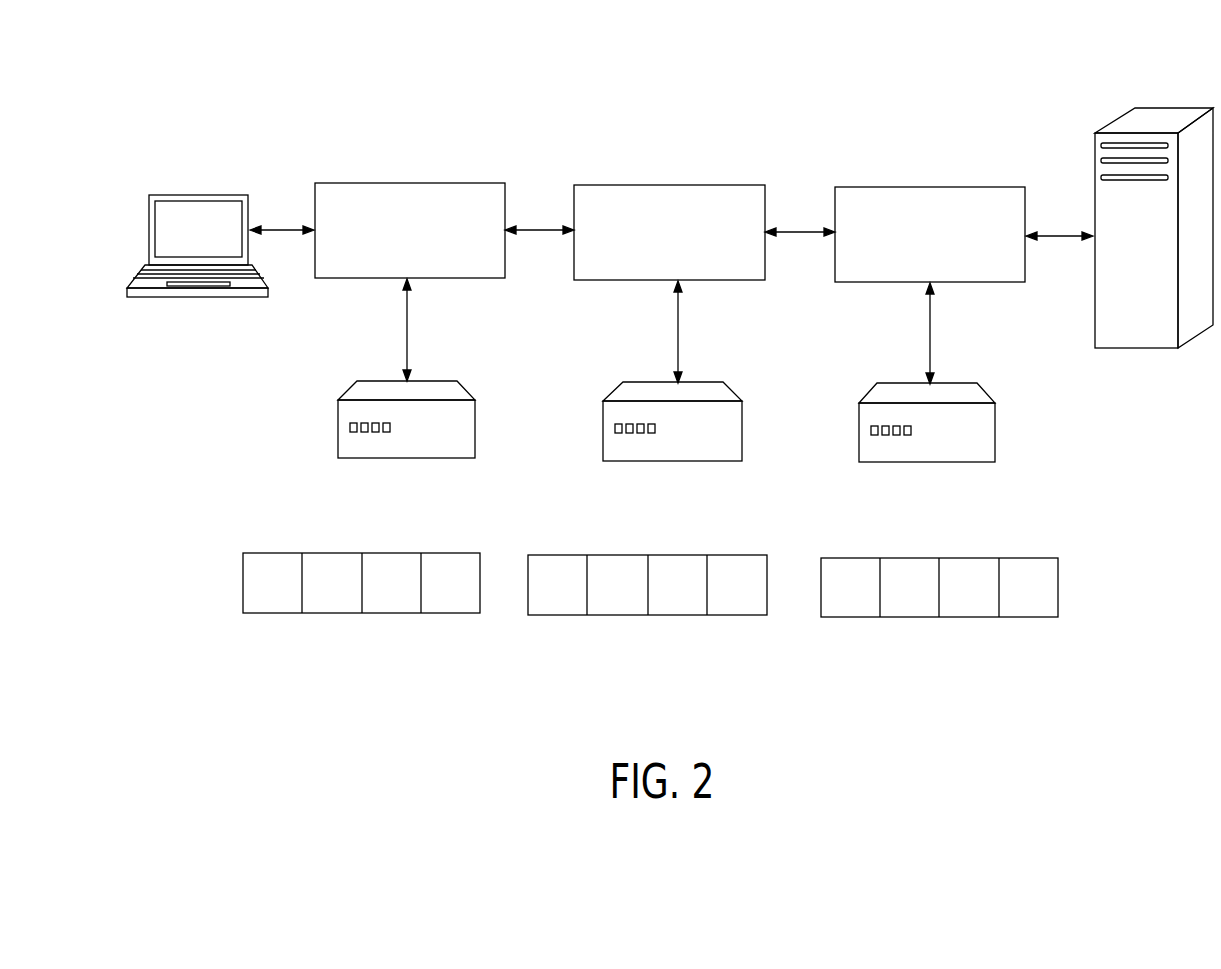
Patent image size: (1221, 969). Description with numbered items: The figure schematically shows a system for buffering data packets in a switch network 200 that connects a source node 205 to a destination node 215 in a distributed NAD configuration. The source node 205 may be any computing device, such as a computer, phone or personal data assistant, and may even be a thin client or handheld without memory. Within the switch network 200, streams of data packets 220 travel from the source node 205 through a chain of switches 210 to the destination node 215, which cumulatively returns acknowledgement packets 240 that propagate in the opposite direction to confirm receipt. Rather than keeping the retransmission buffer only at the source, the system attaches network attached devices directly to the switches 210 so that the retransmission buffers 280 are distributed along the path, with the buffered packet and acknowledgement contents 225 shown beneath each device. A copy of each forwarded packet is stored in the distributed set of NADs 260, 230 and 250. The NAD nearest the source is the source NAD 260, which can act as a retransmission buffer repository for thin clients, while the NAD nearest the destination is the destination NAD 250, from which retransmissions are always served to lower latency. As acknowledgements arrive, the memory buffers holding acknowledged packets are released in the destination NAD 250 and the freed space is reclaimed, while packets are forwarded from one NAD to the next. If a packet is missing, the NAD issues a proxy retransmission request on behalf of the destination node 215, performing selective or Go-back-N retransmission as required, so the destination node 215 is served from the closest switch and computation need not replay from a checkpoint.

The switch network 200 is at (147, 95).
The source node 205 is at (146, 298).
The switches 210 is at (389, 245).
The destination node 215 is at (1158, 107).
The streams of data packets 220 is at (277, 209).
The packet queues 225 is at (886, 638).
The NAD 230 is at (667, 461).
The acknowledgement packets 240 is at (1059, 213).
The destination NAD 250 is at (926, 462).
The source NAD 260 is at (372, 449).
The retransmission buffers 280 is at (334, 427).